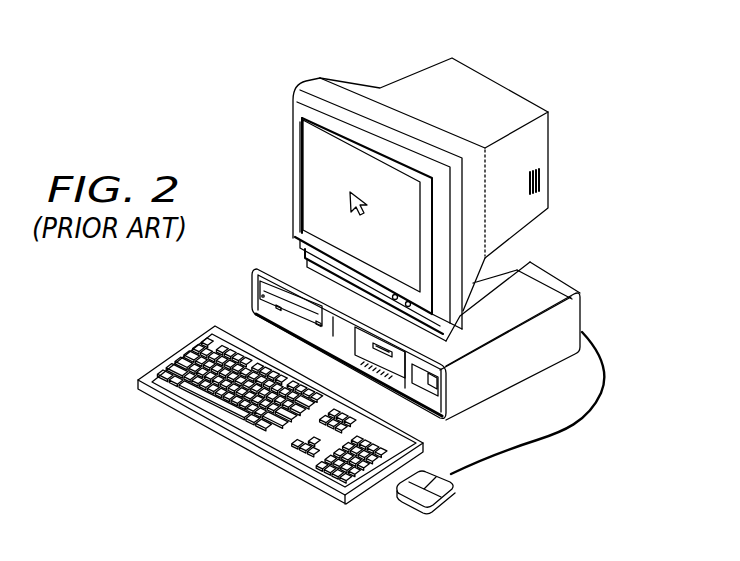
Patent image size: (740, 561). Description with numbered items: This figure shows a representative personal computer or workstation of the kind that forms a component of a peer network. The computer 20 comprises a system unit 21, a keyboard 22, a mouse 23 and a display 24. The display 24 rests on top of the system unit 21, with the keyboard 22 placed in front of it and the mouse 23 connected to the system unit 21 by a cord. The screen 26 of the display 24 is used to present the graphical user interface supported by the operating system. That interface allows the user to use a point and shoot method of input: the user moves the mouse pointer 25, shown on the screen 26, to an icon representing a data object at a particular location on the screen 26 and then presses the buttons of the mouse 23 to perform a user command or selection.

The computer 20 is at (266, 91).
The system unit 21 is at (248, 290).
The keyboard 22 is at (245, 448).
The mouse 23 is at (448, 497).
The display 24 is at (292, 167).
The mouse pointer 25 is at (364, 207).
The screen 26 is at (341, 180).